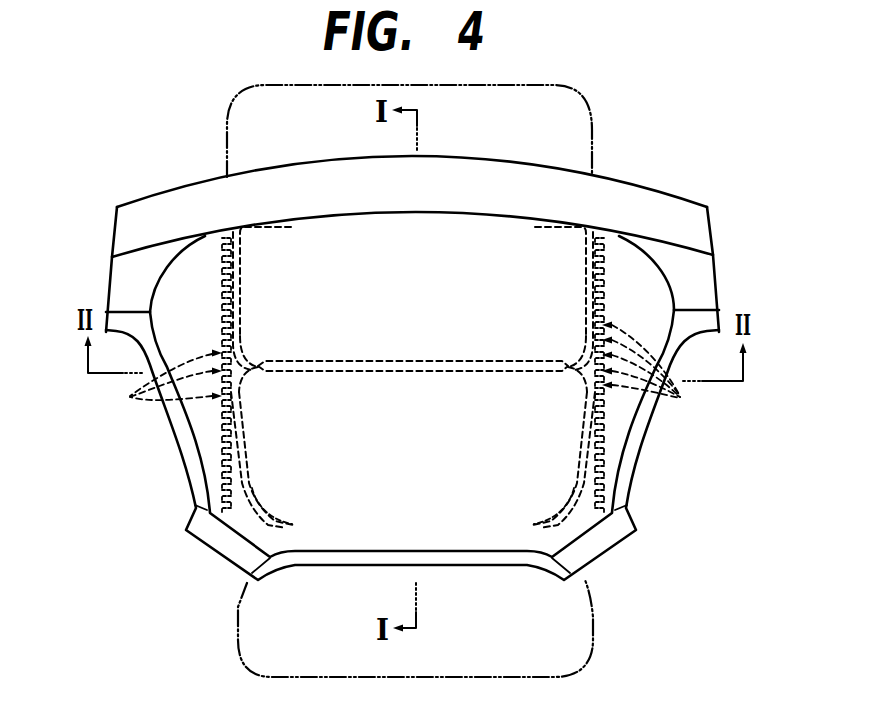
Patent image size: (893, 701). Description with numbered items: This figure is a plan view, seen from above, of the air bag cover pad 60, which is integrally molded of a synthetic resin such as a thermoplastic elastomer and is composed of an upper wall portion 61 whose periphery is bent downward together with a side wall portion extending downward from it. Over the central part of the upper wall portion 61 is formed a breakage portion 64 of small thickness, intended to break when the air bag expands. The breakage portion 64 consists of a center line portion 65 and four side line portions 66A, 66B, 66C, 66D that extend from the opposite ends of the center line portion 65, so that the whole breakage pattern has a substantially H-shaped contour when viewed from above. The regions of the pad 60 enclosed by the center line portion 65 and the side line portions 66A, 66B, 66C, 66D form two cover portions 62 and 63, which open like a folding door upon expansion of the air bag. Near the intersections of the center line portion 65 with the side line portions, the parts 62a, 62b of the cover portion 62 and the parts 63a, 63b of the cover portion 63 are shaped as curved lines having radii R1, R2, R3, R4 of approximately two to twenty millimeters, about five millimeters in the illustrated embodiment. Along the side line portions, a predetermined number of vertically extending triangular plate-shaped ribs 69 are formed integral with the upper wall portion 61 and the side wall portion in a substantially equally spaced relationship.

The pad 60 is at (633, 169).
The upper wall portion 61 is at (505, 226).
The cover portion 62 is at (268, 114).
The part of cover portion 62a is at (261, 352).
The part of cover portion 62b is at (560, 354).
The cover portion 63 is at (256, 604).
The part of cover portion 63a is at (262, 387).
The part of cover portion 63b is at (568, 388).
The breakage portion 64 is at (413, 398).
The center line portion 65 is at (392, 373).
The side line portion 66A is at (243, 266).
The side line portion 66B is at (580, 272).
The side line portion 66C is at (256, 487).
The side line portion 66D is at (572, 487).
The ribs 69 is at (404, 369).
The radius R1 is at (249, 341).
The radius R2 is at (568, 343).
The radius R3 is at (265, 381).
The radius R4 is at (566, 383).